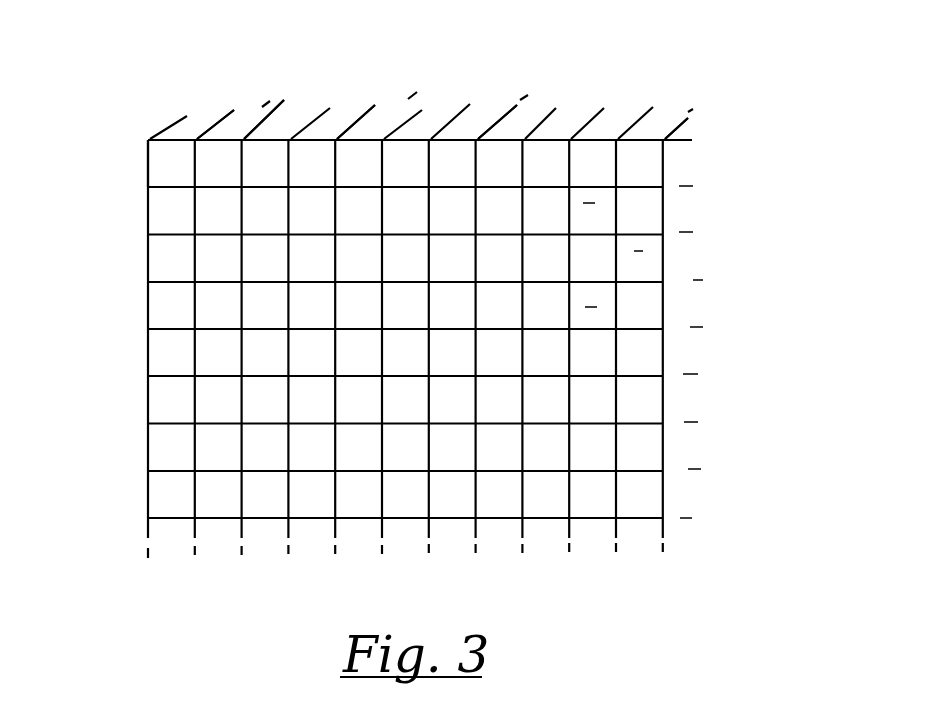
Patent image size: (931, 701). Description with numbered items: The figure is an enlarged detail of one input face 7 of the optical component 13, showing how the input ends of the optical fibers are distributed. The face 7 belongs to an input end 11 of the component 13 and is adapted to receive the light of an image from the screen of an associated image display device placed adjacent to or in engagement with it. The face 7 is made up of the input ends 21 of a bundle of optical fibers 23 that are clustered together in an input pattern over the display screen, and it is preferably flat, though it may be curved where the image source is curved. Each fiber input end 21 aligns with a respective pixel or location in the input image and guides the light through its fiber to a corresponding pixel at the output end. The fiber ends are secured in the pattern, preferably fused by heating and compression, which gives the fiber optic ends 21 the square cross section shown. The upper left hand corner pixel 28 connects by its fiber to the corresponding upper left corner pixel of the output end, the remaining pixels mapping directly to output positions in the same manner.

The input face 7 is at (592, 448).
The input end 11 is at (238, 107).
The optical component 13 is at (677, 107).
The optical fiber input ends 21 is at (638, 355).
The optical fibers 23 is at (150, 218).
The upper left hand corner pixel 28 is at (143, 143).